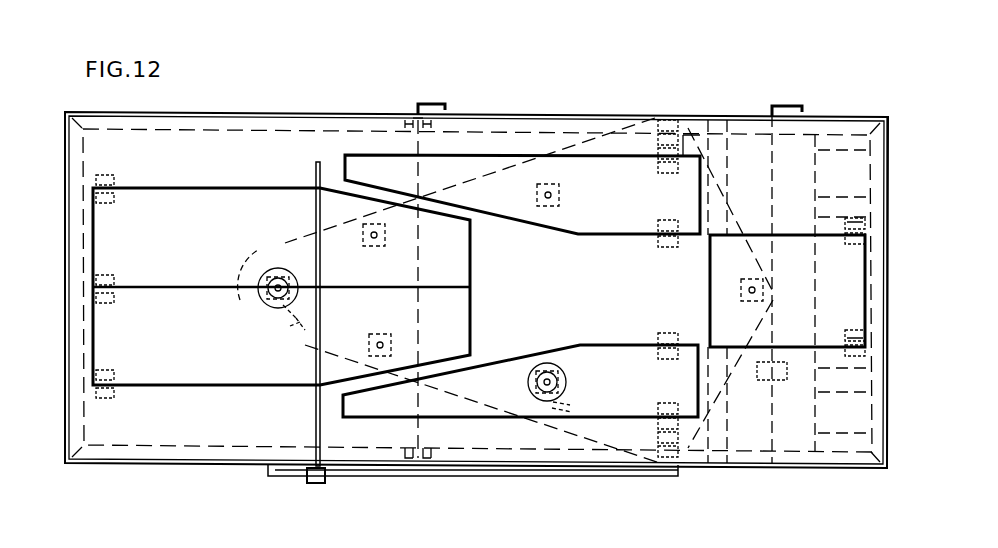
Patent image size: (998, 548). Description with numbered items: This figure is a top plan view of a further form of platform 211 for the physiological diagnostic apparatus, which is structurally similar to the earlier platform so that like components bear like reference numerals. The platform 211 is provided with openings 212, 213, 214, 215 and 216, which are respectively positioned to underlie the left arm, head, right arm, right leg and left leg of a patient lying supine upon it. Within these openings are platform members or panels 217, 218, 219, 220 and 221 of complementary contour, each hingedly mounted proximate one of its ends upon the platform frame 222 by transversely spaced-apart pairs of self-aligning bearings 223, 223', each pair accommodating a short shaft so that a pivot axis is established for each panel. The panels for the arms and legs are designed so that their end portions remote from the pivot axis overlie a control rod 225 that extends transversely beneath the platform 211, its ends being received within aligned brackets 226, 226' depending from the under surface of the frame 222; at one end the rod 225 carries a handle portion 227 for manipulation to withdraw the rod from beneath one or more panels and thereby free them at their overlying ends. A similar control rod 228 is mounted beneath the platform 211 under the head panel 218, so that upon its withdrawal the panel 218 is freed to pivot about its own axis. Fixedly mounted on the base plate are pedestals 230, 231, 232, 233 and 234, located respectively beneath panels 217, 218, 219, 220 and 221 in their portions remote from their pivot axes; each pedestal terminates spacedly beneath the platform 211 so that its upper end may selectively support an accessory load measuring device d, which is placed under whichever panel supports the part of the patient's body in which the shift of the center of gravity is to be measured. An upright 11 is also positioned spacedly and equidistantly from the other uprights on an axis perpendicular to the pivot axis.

The upright 11 is at (265, 300).
The accessory load measuring device d is at (570, 383).
The platform 211 is at (878, 170).
The opening 212 is at (688, 448).
The opening 213 is at (864, 302).
The opening 214 is at (642, 165).
The opening 215 is at (242, 190).
The opening 216 is at (242, 384).
The platform member 217 is at (515, 405).
The platform member 218 is at (843, 322).
The platform member 219 is at (490, 152).
The platform member 220 is at (162, 203).
The platform member 221 is at (178, 368).
The platform frame 222 is at (75, 465).
The self-aligning bearing 223 is at (863, 299).
The self-aligning bearing 223' is at (913, 293).
The control rod 225 is at (420, 103).
The bracket 226 is at (405, 320).
The bracket 226' is at (396, 89).
The handle portion 227 is at (440, 103).
The control rod 228 is at (775, 104).
The pedestal 230 is at (546, 402).
The pedestal 231 is at (742, 292).
The pedestal 232 is at (560, 170).
The pedestal 233 is at (370, 223).
The pedestal 234 is at (372, 357).